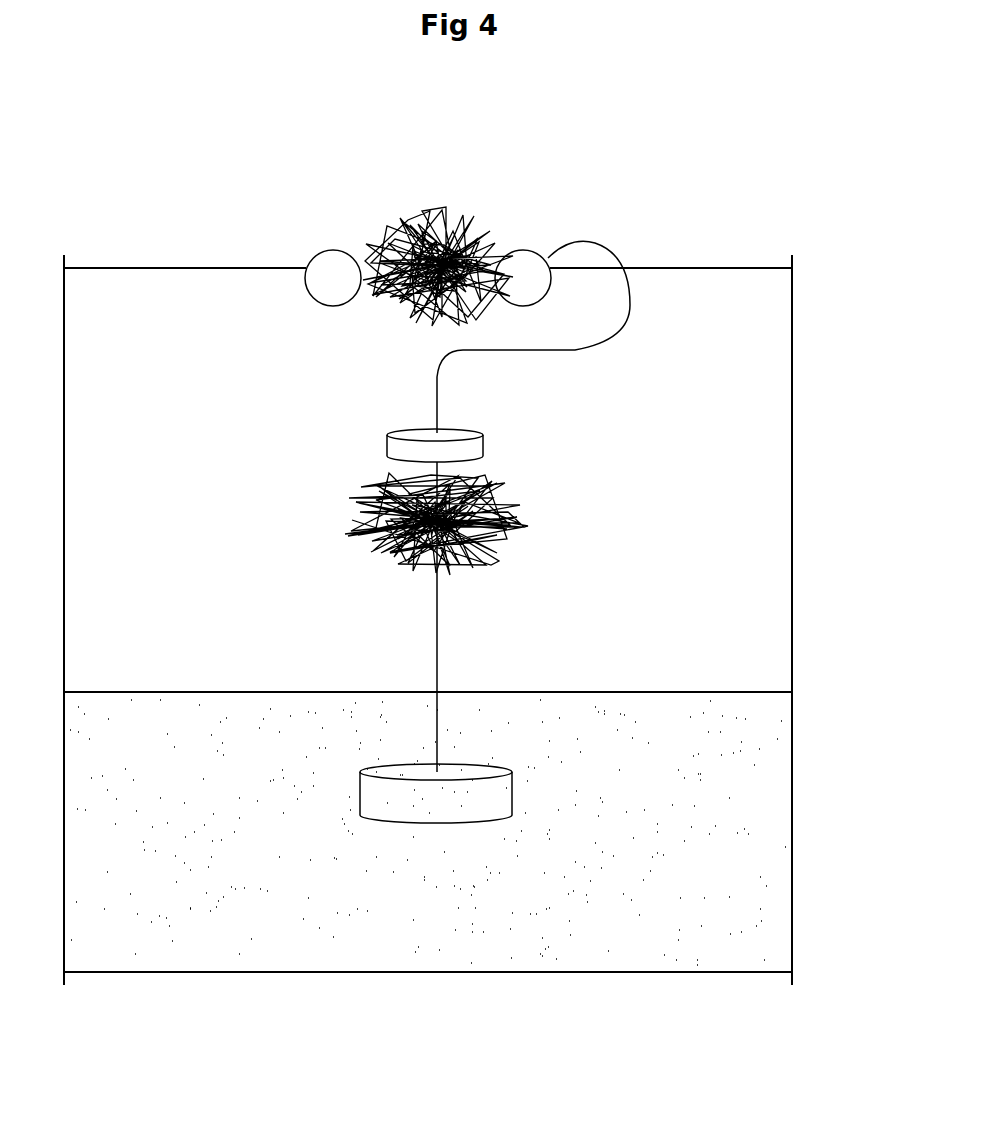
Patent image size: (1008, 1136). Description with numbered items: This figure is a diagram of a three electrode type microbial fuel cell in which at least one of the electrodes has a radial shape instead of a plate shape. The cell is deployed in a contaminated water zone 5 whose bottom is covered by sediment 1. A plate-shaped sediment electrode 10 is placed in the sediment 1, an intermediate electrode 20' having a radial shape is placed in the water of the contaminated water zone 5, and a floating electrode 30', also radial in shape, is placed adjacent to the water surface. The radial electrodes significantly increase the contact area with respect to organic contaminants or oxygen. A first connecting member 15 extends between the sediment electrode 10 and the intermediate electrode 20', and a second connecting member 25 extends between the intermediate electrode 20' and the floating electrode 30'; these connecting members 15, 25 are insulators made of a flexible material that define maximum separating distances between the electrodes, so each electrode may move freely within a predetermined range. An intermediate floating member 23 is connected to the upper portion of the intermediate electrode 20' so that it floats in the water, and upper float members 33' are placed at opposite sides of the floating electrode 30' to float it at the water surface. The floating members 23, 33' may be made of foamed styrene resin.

The sediment 1 is at (753, 842).
The contaminated water zone 5 is at (753, 462).
The sediment electrode 10 is at (430, 827).
The first connecting member 15 is at (437, 658).
The intermediate electrode 20' is at (494, 524).
The intermediate floating member 23 is at (487, 445).
The second connecting member 25 is at (630, 312).
The floating electrode 30' is at (446, 231).
The upper float members 33' is at (428, 226).